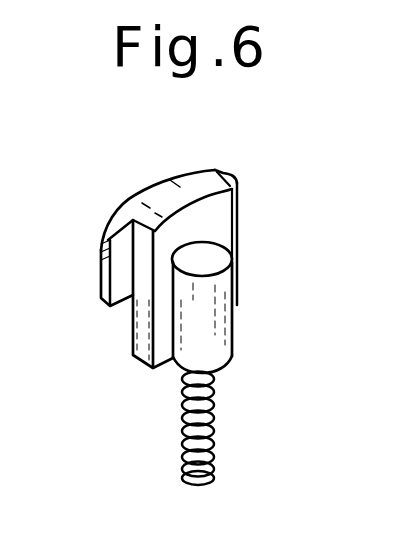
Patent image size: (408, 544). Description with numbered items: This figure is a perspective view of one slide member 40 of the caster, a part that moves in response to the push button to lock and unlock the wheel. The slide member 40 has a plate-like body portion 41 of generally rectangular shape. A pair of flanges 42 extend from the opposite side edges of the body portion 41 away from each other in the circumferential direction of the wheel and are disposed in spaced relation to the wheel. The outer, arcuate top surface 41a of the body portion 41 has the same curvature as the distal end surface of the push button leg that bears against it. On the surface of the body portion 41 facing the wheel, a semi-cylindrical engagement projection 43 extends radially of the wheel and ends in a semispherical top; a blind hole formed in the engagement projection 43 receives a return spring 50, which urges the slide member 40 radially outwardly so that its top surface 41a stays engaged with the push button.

The slide member 40 is at (196, 232).
The body portion 41 is at (206, 249).
The top surface 41a is at (172, 188).
The flanges 42 is at (123, 276).
The engagement projection 43 is at (220, 312).
The return spring 50 is at (212, 420).